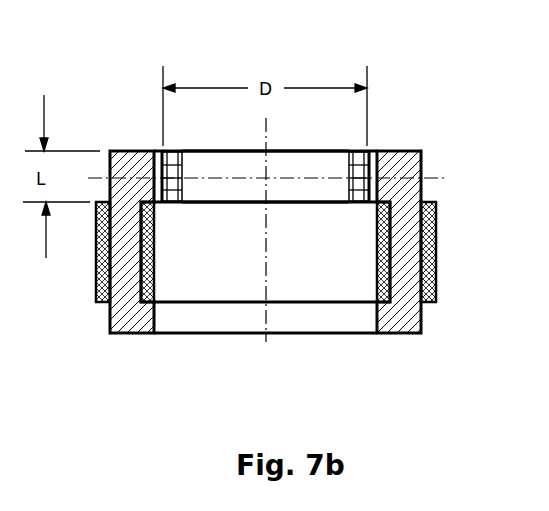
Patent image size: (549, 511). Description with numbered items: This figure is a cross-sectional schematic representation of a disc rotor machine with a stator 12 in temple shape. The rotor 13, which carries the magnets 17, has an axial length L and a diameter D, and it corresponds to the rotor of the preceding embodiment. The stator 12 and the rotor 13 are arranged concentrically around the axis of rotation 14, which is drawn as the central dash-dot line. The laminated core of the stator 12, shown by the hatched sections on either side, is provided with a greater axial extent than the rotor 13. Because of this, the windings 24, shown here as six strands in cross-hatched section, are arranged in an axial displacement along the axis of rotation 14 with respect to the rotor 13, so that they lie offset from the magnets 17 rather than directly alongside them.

The stator 12 is at (132, 305).
The rotor 13 is at (305, 187).
The axis of rotation 14 is at (267, 280).
The magnets 17 is at (177, 183).
The windings 24 is at (95, 268).